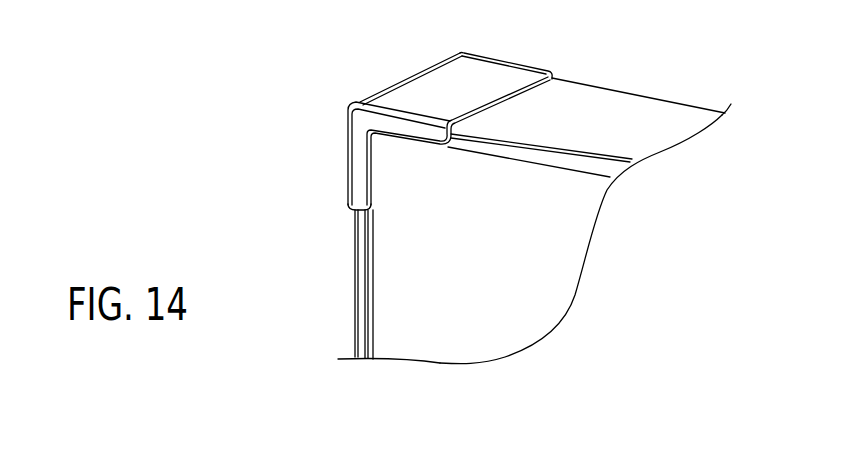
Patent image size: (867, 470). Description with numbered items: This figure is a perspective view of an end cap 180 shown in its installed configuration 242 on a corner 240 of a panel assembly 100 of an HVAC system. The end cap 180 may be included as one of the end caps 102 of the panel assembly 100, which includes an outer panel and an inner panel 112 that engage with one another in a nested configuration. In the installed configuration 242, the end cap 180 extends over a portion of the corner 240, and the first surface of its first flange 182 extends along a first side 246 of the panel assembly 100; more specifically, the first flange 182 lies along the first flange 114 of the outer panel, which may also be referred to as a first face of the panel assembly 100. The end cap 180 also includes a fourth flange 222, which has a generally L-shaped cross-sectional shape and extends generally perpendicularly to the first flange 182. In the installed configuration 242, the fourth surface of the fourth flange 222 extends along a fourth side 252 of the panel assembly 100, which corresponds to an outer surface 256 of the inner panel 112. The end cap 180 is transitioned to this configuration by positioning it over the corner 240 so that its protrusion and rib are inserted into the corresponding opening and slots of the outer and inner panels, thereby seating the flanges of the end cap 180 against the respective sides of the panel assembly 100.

The panel assembly 100 is at (481, 220).
The end caps 102 is at (362, 138).
The end cap 180 is at (362, 138).
The inner panel 112 is at (356, 319).
The first flange 114 is at (615, 212).
The first side 246 is at (615, 212).
The first flange 182 is at (457, 65).
The fourth flange 222 is at (362, 207).
The corner 240 is at (362, 138).
The installed configuration 242 is at (335, 140).
The fourth side 252 is at (577, 235).
The outer surface 256 is at (388, 265).